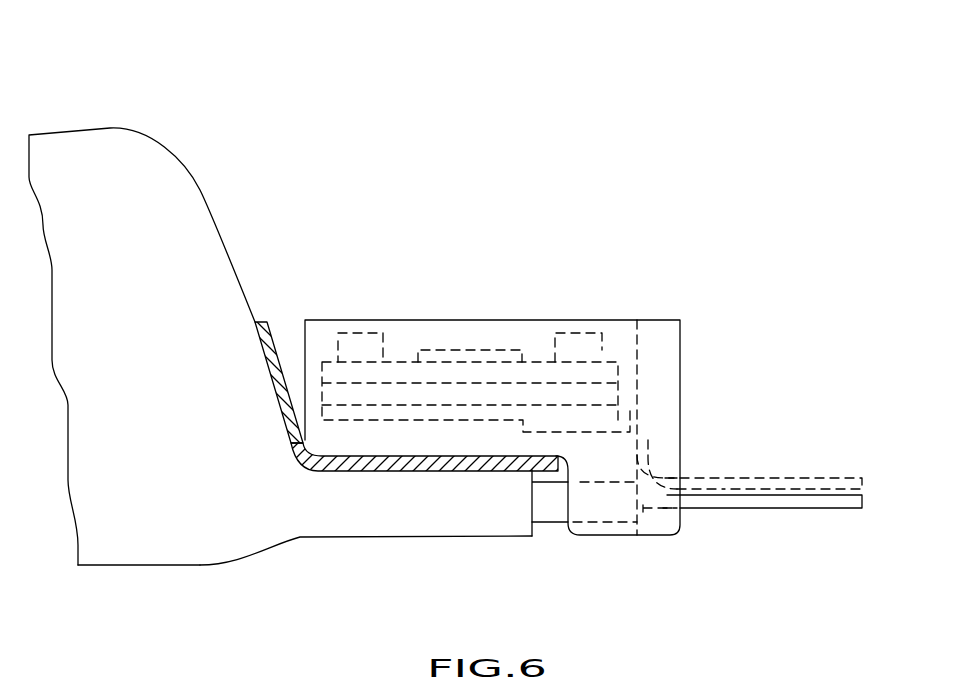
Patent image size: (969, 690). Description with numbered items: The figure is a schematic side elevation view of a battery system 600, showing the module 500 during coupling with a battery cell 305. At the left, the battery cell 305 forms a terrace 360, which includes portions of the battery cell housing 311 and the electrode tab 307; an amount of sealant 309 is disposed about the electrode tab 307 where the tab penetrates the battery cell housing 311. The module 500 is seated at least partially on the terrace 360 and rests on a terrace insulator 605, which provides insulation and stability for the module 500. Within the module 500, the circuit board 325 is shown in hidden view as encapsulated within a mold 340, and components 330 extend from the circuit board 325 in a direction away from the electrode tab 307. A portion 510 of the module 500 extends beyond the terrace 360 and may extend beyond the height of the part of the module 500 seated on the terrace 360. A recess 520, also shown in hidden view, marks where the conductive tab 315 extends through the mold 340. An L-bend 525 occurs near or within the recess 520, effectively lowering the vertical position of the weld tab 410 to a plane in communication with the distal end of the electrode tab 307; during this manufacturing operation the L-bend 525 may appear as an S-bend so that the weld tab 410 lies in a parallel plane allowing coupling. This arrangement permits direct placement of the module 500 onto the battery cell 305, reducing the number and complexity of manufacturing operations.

The battery system 600 is at (103, 97).
The battery cell 305 is at (110, 565).
The terrace 360 is at (373, 535).
The terrace insulator 605 is at (258, 325).
The module 500 is at (548, 320).
The components 330 is at (364, 333).
The mold 340 is at (475, 320).
The circuit board 325 is at (408, 362).
The portion 510 is at (625, 320).
The recess 520 is at (637, 365).
The L-bend 525 is at (637, 428).
The battery cell housing 311 is at (480, 536).
The sealant 309 is at (550, 523).
The conductive tab 315 is at (712, 478).
The weld tab 410 is at (778, 478).
The electrode tab 307 is at (785, 508).